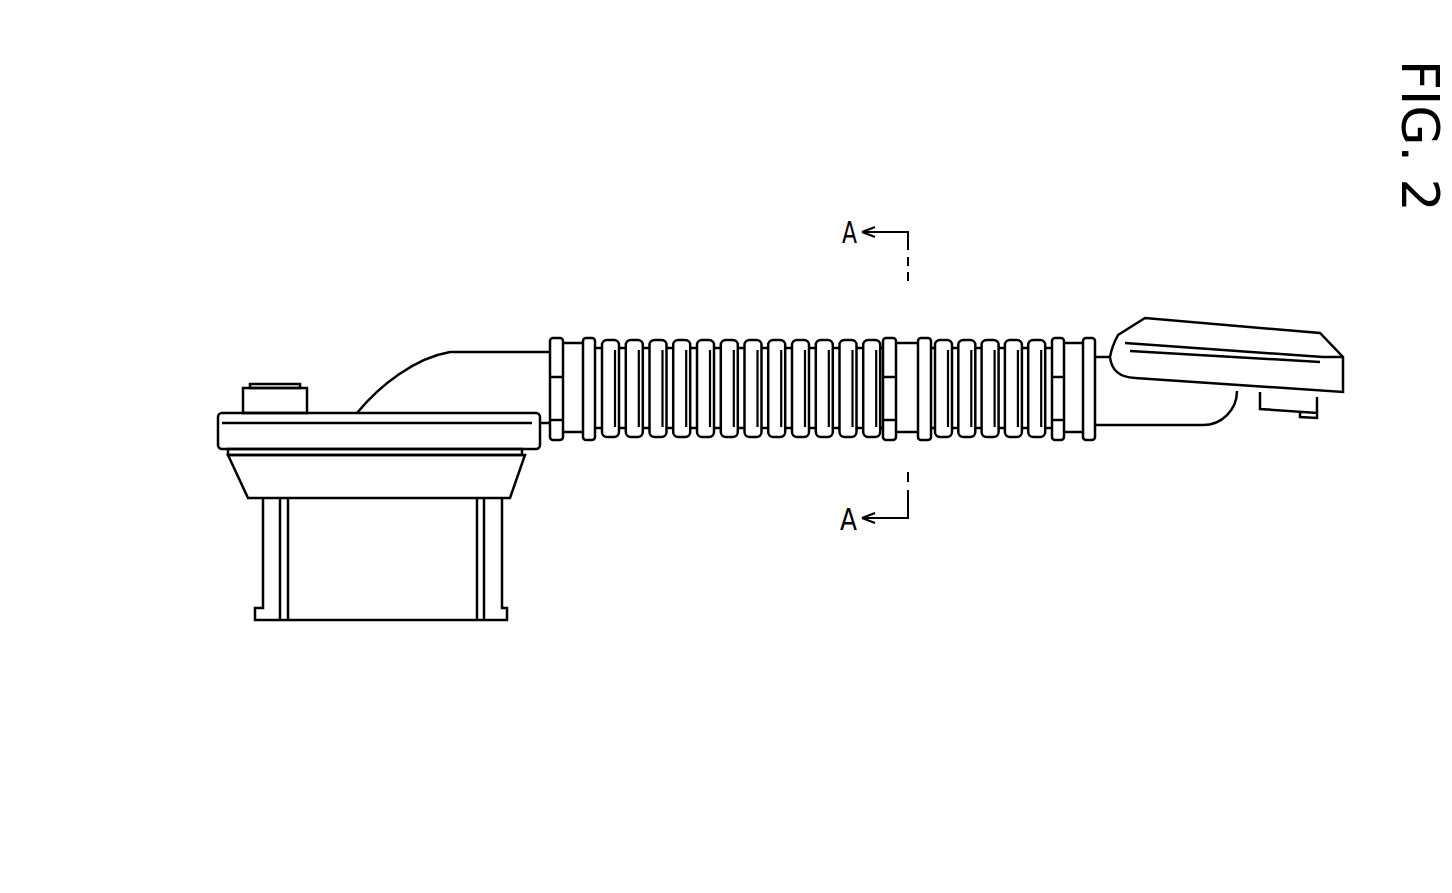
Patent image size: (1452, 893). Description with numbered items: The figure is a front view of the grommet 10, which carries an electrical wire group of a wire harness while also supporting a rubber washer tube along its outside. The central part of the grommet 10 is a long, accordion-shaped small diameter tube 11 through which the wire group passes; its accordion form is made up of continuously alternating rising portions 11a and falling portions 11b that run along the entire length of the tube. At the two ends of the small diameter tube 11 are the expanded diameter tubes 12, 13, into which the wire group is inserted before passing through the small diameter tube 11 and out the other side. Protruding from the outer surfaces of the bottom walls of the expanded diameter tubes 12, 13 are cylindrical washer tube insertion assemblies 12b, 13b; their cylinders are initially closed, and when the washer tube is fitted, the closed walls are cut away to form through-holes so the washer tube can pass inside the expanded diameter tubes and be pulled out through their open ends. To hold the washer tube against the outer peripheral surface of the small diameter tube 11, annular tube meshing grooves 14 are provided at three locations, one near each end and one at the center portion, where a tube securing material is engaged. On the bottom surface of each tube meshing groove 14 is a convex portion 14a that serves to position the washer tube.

The grommet 10 is at (455, 326).
The small diameter tube 11 is at (823, 394).
The rising portion 11a is at (732, 437).
The falling portion 11b is at (740, 437).
The expanded diameter tube 12 is at (218, 434).
The washer tube insertion assembly 12b is at (247, 402).
The expanded diameter tube 13 is at (1345, 377).
The washer tube insertion assembly 13b is at (1323, 400).
The tube meshing groove 14 is at (572, 342).
The convex portion 14a is at (576, 366).